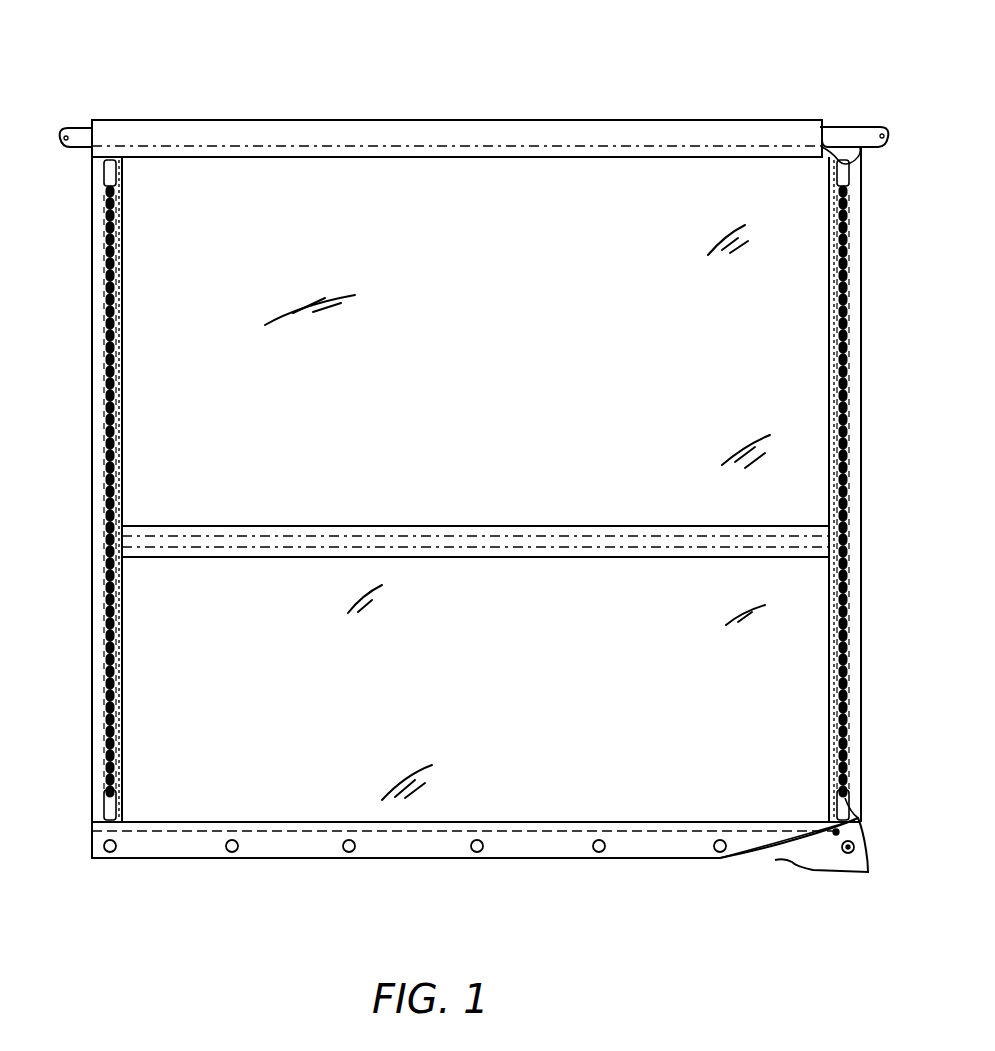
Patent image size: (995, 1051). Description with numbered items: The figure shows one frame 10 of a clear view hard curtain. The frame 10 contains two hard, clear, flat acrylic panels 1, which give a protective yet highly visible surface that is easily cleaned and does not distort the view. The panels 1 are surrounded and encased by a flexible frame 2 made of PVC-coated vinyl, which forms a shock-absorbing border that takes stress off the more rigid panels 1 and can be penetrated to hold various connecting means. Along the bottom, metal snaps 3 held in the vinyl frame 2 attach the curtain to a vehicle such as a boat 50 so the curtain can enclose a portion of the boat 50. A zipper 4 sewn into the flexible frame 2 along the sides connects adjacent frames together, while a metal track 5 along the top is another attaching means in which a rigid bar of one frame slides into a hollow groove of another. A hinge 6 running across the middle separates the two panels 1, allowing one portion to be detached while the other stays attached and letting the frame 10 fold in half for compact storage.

The frame 10 is at (345, 101).
The metal track 5 is at (706, 140).
The flexible frame 2 is at (100, 302).
The clear flat panels 1 is at (790, 321).
The zipper 4 is at (108, 530).
The hinge 6 is at (292, 556).
The metal snaps 3 is at (236, 850).
The boat 50 is at (822, 862).